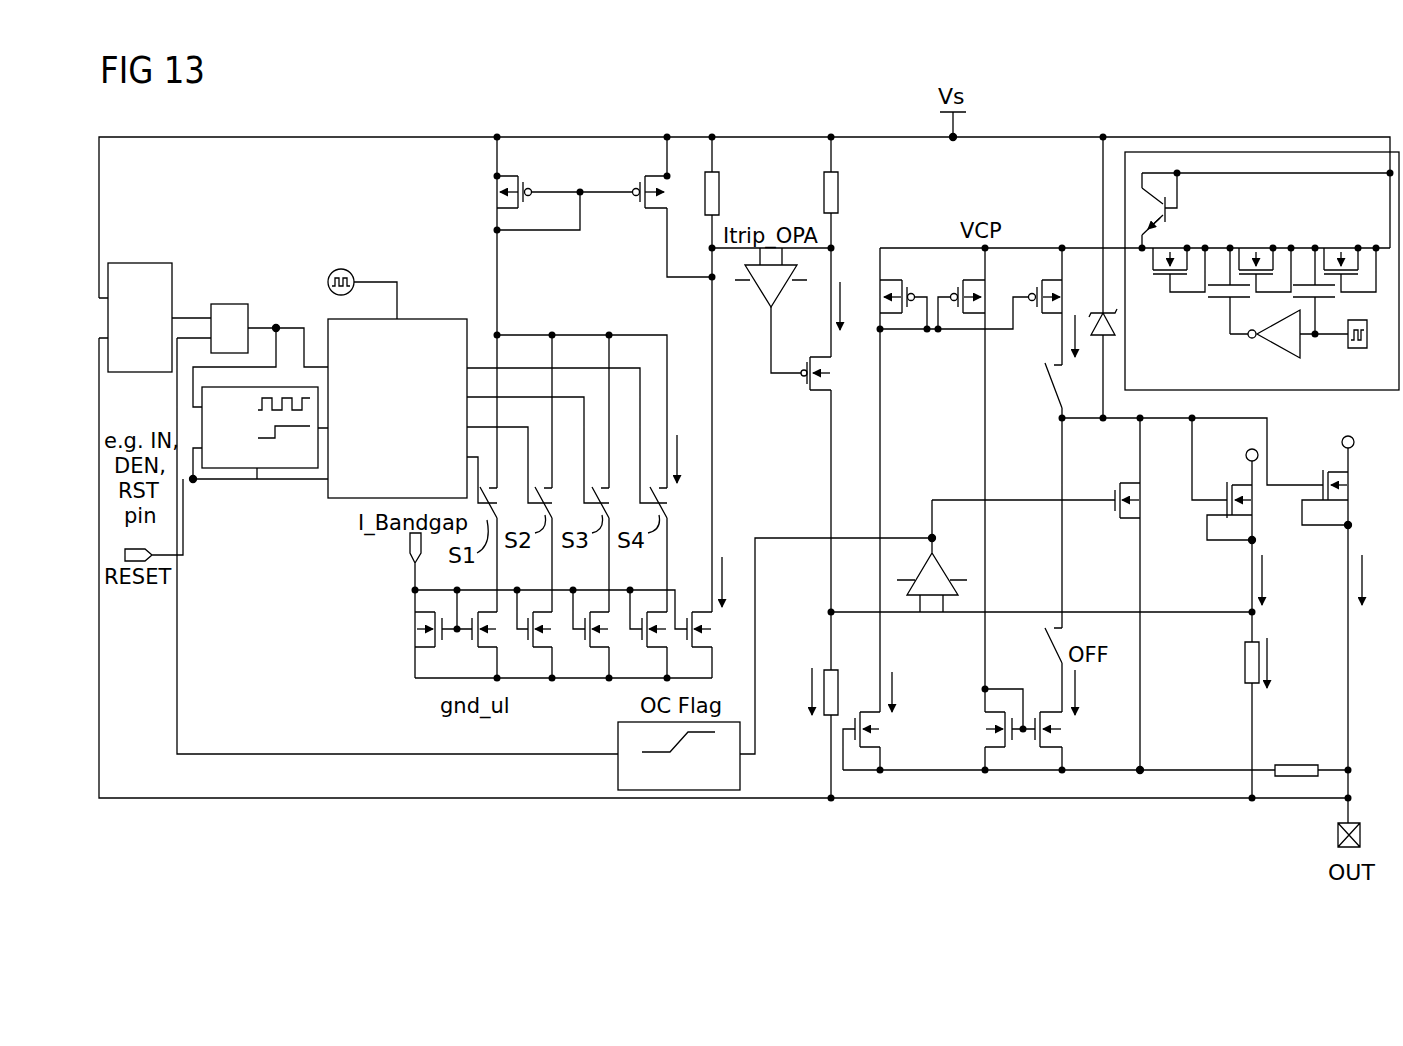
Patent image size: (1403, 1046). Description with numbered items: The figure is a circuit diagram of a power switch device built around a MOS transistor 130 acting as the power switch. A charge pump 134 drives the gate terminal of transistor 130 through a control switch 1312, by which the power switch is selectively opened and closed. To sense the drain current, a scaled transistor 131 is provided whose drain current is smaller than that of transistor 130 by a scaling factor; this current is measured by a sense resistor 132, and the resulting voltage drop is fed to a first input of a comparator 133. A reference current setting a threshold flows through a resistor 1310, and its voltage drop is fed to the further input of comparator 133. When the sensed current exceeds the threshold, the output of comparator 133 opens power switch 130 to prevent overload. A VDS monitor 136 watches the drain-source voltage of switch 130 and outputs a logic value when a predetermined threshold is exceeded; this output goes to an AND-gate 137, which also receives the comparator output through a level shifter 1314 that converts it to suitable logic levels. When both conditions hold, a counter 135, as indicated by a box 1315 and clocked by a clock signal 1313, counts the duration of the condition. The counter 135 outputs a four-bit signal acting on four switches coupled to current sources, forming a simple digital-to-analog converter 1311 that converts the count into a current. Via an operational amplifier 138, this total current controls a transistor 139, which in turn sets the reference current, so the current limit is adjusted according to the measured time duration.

The MOS transistor 130 is at (1323, 472).
The scaled transistor 131 is at (1228, 485).
The sense resistor 132 is at (1245, 662).
The comparator 133 is at (935, 600).
The charge pump 134 is at (1262, 152).
The counter 135 is at (437, 319).
The VDS monitor 136 is at (143, 263).
The AND-gate 137 is at (228, 304).
The operational amplifier 138 is at (785, 290).
The transistor 139 is at (805, 380).
The resistor 1310 is at (826, 668).
The digital-to-analog converter 1311 is at (738, 541).
The control switch 1312 is at (1052, 384).
The clock signal 1313 is at (341, 269).
The level shifter 1314 is at (618, 742).
The box 1315 is at (258, 480).